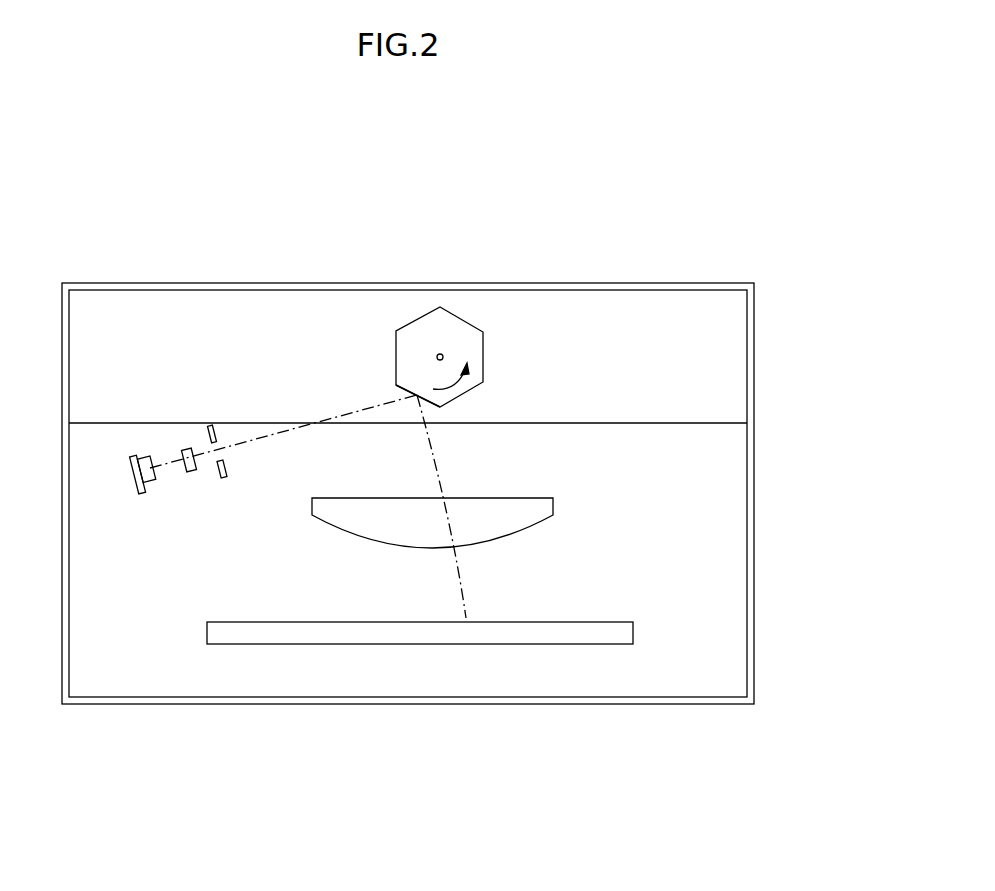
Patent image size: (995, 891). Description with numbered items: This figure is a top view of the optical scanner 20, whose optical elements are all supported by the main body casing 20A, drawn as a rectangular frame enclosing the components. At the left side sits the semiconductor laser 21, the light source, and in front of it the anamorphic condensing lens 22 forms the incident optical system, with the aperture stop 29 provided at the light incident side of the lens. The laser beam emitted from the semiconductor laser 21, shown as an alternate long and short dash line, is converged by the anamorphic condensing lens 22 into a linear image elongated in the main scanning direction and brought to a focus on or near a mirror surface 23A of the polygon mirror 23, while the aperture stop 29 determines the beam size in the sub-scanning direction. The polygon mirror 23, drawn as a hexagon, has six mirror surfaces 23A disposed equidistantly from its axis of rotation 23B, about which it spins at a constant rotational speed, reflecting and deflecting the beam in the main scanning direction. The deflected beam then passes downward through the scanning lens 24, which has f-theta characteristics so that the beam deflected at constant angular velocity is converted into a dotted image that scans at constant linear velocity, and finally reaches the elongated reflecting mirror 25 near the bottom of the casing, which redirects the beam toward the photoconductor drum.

The scanner 20 is at (640, 252).
The main body casing 20A is at (529, 283).
The semiconductor laser 21 is at (138, 456).
The anamorphic condensing lens 22 is at (184, 448).
The aperture stop 29 is at (210, 425).
The polygon mirror 23 is at (463, 324).
The mirror surface 23A is at (412, 396).
The axis of rotation 23B is at (443, 356).
The scanning lens 24 is at (512, 497).
The reflecting mirror 25 is at (536, 645).